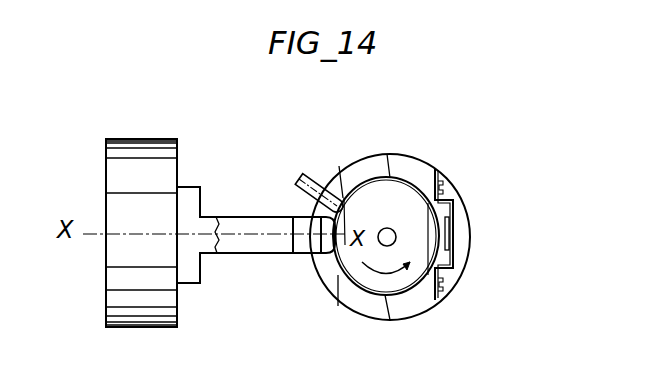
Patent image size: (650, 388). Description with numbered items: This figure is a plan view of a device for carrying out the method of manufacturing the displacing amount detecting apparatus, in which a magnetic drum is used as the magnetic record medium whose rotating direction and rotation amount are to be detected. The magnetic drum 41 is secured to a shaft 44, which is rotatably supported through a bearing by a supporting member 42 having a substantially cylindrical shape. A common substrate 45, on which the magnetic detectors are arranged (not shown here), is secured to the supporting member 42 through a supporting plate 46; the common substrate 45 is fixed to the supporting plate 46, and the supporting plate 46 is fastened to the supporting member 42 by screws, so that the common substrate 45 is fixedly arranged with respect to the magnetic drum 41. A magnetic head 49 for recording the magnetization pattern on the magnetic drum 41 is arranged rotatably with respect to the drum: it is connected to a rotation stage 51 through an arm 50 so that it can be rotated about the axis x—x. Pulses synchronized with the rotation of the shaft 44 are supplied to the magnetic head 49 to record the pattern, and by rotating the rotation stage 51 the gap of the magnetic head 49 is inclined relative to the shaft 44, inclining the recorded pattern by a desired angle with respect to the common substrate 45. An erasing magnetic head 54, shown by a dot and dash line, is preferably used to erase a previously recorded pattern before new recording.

The rotation stage 51 is at (137, 139).
The arm 50 is at (243, 216).
The magnetic head 49 is at (300, 255).
The erasing magnetic head 54 is at (300, 176).
The shaft 44 is at (386, 228).
The magnetic drum 41 is at (402, 195).
The common substrate 45 is at (447, 226).
The supporting member 42 is at (470, 238).
The supporting plate 46 is at (453, 268).